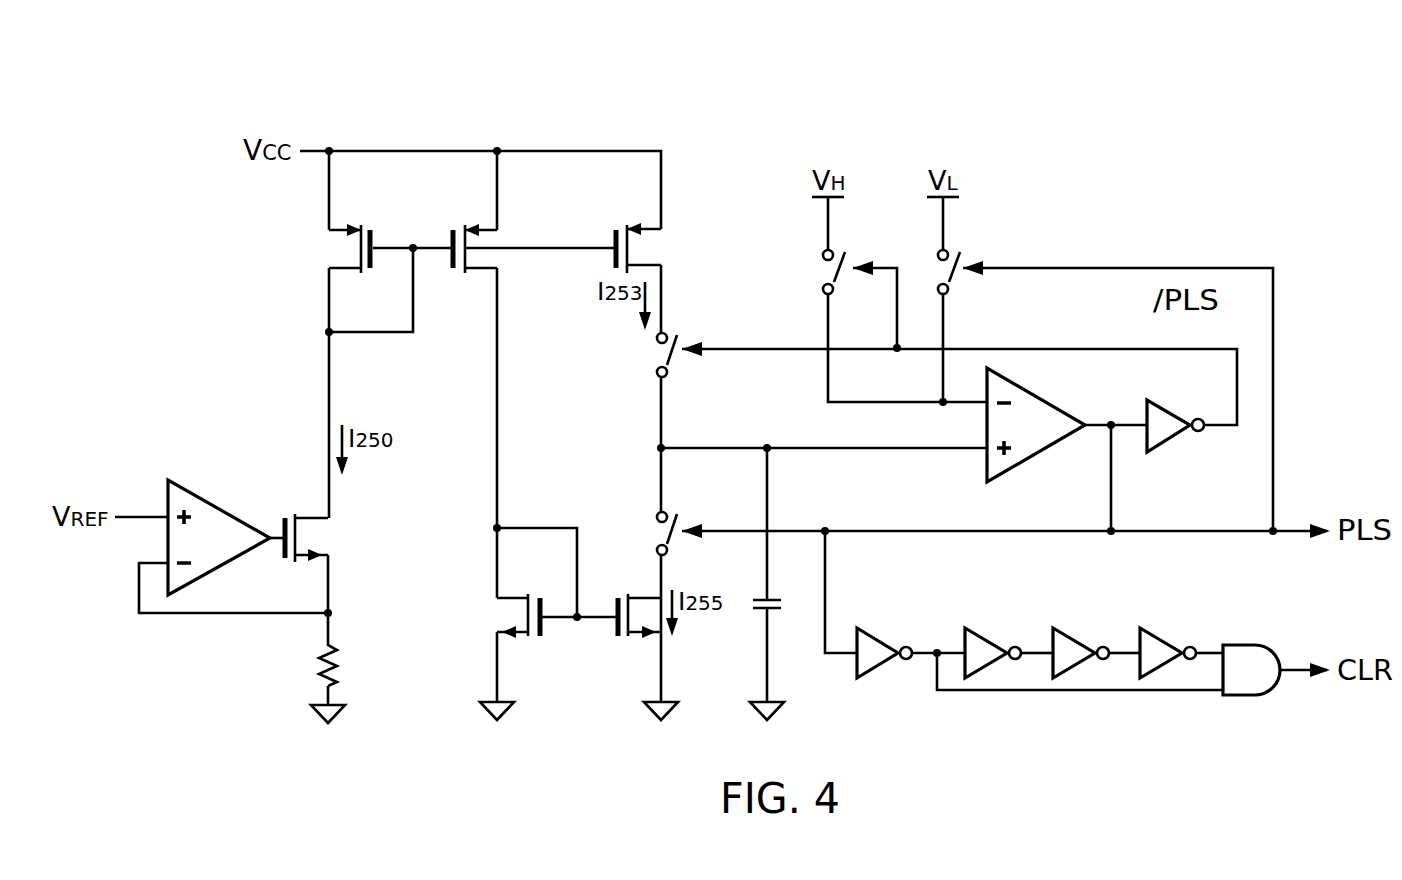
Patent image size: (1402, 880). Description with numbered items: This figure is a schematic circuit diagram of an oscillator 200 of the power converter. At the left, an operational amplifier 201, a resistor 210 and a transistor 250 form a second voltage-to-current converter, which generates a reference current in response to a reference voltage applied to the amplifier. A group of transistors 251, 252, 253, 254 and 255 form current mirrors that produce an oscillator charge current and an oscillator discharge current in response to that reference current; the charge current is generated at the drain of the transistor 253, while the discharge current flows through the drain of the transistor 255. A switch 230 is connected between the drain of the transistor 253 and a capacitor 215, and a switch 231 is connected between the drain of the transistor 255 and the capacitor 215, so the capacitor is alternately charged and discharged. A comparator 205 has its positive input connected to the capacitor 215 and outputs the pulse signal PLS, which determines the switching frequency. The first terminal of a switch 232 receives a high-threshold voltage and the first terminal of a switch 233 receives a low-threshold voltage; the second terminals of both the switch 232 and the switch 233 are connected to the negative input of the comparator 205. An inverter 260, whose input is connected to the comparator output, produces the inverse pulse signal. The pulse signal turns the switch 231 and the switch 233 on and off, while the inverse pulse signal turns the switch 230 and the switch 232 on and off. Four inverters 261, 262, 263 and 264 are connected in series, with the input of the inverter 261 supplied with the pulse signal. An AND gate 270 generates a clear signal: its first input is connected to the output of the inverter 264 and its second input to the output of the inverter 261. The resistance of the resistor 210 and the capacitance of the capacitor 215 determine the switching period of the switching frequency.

The oscillator 200 is at (1267, 163).
The operational amplifier 201 is at (193, 490).
The comparator 205 is at (1025, 467).
The resistor 210 is at (335, 665).
The capacitor 215 is at (760, 615).
The switch 230 is at (655, 351).
The switch 231 is at (655, 535).
The switch 232 is at (818, 280).
The switch 233 is at (960, 284).
The transistor 250 is at (327, 538).
The transistor 251 is at (333, 250).
The transistor 252 is at (462, 280).
The transistor 253 is at (663, 247).
The transistor 254 is at (500, 617).
The transistor 255 is at (622, 638).
The inverter 260 is at (1168, 444).
The inverter 261 is at (871, 630).
The inverter 262 is at (980, 630).
The inverter 263 is at (1068, 630).
The inverter 264 is at (1155, 630).
The AND gate 270 is at (1243, 645).